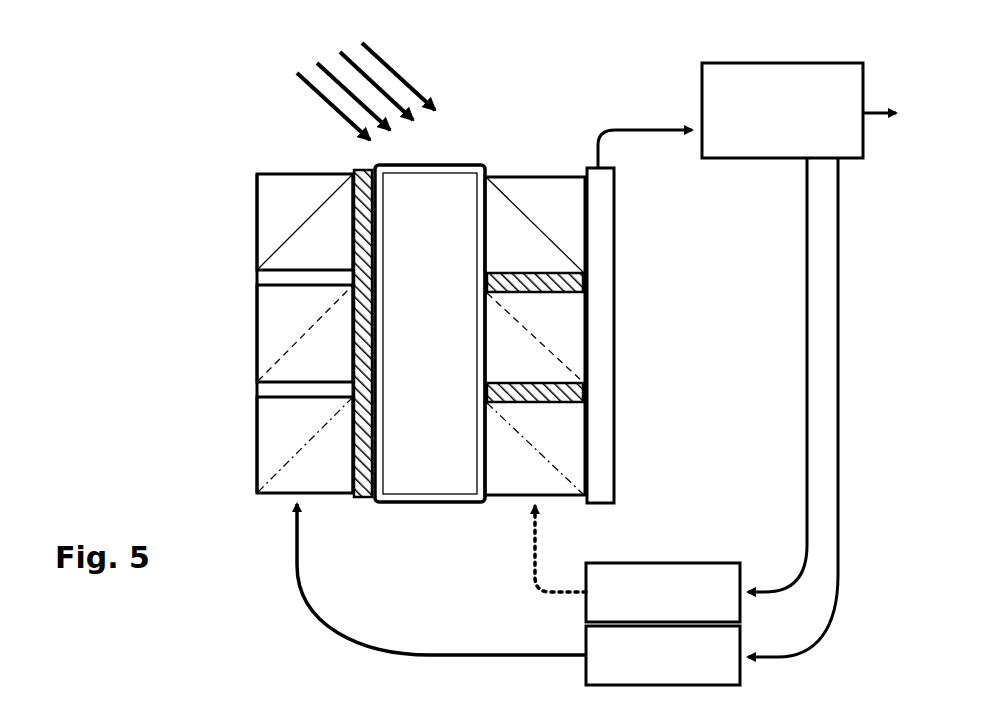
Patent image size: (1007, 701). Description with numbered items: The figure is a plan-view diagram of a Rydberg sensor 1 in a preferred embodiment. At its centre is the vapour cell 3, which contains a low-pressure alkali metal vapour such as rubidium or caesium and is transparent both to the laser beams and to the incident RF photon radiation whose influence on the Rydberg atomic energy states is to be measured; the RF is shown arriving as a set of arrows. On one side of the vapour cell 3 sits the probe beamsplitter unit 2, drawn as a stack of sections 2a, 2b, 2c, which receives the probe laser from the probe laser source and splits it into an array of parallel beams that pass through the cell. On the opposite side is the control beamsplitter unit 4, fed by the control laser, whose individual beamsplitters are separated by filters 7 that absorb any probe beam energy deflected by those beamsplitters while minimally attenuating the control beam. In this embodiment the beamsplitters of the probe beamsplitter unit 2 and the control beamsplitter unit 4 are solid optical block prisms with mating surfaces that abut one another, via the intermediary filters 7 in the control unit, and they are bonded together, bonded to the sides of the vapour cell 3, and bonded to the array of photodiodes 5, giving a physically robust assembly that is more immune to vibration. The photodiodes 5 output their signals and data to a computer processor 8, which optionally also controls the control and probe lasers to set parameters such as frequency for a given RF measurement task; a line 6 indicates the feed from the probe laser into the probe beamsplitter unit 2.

The Rydberg sensor 1 is at (509, 354).
The probe beamsplitter unit 2 is at (265, 310).
The antenna segment 2a is at (255, 445).
The antenna segment 2b is at (255, 333).
The antenna segment 2c is at (257, 222).
The vapour cell 3 is at (430, 358).
The control beamsplitter unit 4 is at (608, 318).
The array of photodiodes 5 is at (618, 335).
The supply line 6 is at (362, 503).
The filters 7 is at (587, 284).
The computer processor 8 is at (799, 110).